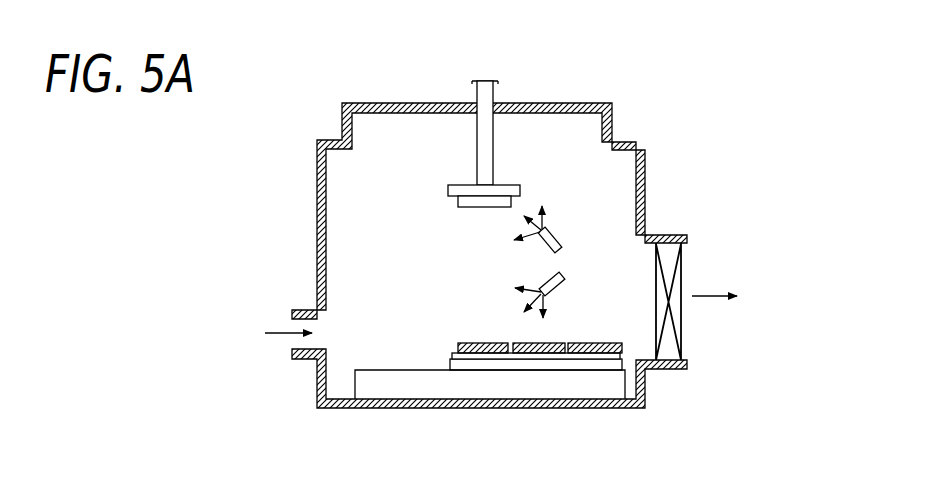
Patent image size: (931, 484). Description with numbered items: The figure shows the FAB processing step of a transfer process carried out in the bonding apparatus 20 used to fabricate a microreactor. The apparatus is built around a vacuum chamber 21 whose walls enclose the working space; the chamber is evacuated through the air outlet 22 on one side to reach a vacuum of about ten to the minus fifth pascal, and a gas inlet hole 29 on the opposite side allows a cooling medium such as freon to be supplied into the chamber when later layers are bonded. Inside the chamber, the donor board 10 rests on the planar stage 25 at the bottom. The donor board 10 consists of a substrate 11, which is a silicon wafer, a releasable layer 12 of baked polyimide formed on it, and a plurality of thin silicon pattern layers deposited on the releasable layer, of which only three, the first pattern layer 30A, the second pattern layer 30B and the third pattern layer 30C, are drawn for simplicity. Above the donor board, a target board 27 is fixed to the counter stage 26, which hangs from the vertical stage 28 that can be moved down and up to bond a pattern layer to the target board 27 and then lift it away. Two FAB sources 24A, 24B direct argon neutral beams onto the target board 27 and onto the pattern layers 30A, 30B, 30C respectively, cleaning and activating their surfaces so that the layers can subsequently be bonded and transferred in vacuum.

The bonding apparatus 20 is at (707, 77).
The vacuum chamber 21 is at (646, 172).
The air outlet 22 is at (683, 282).
The FAB source 24A is at (553, 228).
The FAB source 24B is at (563, 273).
The planar stage 25 is at (597, 388).
The counter stage 26 is at (448, 191).
The target board 27 is at (458, 203).
The vertical stage 28 is at (477, 122).
The gas inlet hole 29 is at (300, 361).
The donor board 10 is at (595, 349).
The substrate 11 is at (628, 366).
The releasable layer 12 is at (624, 359).
The first pattern layer 30A is at (456, 346).
The second pattern layer 30B is at (549, 342).
The third pattern layer 30C is at (623, 352).